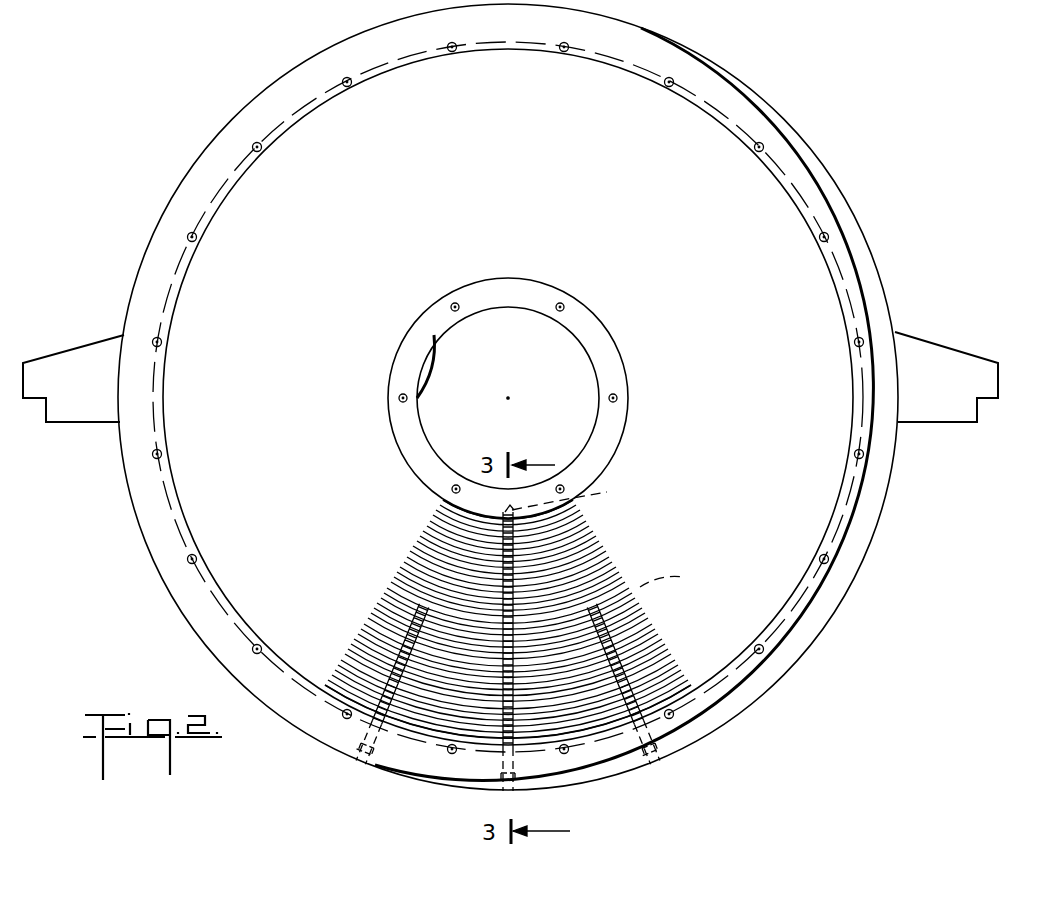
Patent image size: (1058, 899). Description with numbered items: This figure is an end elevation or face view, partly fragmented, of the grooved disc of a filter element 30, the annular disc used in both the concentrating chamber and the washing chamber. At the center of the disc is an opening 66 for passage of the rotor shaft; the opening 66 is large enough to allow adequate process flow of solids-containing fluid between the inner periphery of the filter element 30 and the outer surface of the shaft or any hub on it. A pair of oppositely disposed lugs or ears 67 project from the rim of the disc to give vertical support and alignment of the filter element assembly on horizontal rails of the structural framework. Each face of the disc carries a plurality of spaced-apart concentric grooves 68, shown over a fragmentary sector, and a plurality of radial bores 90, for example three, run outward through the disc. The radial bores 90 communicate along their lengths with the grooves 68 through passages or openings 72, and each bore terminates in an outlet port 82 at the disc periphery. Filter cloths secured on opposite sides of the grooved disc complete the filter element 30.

The filter element 30 is at (300, 391).
The opening 66 is at (580, 357).
The lugs or ears 67 is at (72, 350).
The concentric grooves 68 is at (607, 552).
The passages or openings 72 is at (487, 524).
The outlet ports 82 is at (683, 753).
The radial bores 90 is at (609, 535).